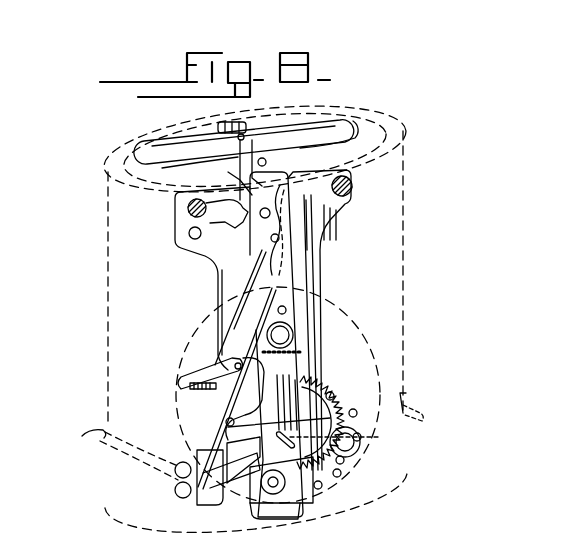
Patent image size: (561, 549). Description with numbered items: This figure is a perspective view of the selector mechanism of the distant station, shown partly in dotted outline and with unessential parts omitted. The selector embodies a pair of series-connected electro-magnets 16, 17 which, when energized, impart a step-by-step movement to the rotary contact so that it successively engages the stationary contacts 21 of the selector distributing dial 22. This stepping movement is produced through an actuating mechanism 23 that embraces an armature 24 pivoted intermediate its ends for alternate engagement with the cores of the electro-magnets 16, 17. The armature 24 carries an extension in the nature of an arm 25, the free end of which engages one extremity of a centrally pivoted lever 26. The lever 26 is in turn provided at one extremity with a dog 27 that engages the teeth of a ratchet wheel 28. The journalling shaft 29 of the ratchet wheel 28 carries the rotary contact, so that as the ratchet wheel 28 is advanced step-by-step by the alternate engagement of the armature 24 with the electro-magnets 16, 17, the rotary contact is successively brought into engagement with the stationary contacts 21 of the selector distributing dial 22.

The electro-magnet 16 is at (108, 255).
The electro-magnet 17 is at (403, 233).
The stationary contacts 21 is at (320, 490).
The selector distributing dial 22 is at (360, 487).
The actuating mechanism 23 is at (307, 275).
The armature 24 is at (212, 137).
The arm 25 is at (215, 337).
The centrally pivoted lever 26 is at (210, 430).
The dog 27 is at (240, 483).
The ratchet wheel 28 is at (345, 403).
The journalling shaft 29 is at (362, 450).